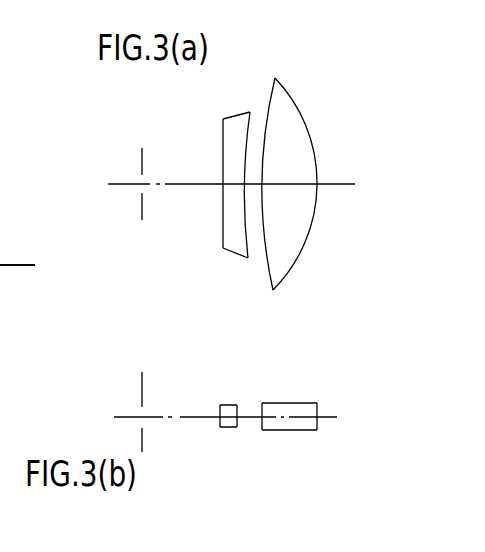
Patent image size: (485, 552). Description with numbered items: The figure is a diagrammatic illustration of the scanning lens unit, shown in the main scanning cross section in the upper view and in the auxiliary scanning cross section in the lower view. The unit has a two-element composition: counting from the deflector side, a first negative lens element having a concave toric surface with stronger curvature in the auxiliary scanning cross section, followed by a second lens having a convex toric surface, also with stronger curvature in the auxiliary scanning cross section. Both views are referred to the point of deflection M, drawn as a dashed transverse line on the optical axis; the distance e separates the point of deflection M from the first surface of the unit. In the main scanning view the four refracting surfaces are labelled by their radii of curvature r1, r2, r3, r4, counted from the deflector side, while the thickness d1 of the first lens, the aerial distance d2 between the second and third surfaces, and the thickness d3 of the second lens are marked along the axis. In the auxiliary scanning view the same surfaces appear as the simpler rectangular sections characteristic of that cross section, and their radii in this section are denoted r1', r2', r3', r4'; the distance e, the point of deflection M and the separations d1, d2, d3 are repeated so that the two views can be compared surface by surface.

In FIG. 3A, the radius of curvature of the first surface in the main scanning cross section r1 is at (208, 163).
In FIG. 3A, the radius of curvature of the second surface in the main scanning cross section r2 is at (242, 163).
In FIG. 3A, the radius of curvature of the third surface in the main scanning cross section r3 is at (266, 166).
In FIG. 3A, the radius of curvature of the fourth surface in the main scanning cross section r4 is at (300, 173).
In FIG. 3A, the thickness between the first and second surfaces d1 is at (232, 187).
In FIG. 3B, the thickness between the first and second surfaces d1 is at (228, 417).
In FIG. 3A, the aerial distance between the second and third surfaces d2 is at (253, 186).
In FIG. 3B, the aerial distance between the second and third surfaces d2 is at (252, 417).
In FIG. 3A, the thickness between the third and fourth surfaces d3 is at (297, 187).
In FIG. 3B, the thickness between the third and fourth surfaces d3 is at (302, 417).
In FIG. 3A, the distance between the point of deflection and the first surface e is at (183, 186).
In FIG. 3B, the distance between the point of deflection and the first surface e is at (183, 412).
In FIG. 3A, the point of deflection M is at (142, 222).
In FIG. 3B, the point of deflection M is at (142, 362).
In FIG. 3B, the radius of curvature of the first surface in the auxiliary scanning cross section r1' is at (213, 437).
In FIG. 3B, the radius of curvature of the second surface in the auxiliary scanning cross sectio r2' is at (242, 443).
In FIG. 3B, the radius of curvature of the third surface in the auxiliary scanning cross section r3' is at (271, 439).
In FIG. 3B, the radius of curvature of the fourth surface in the auxiliary scanning cross sectio r4' is at (329, 440).